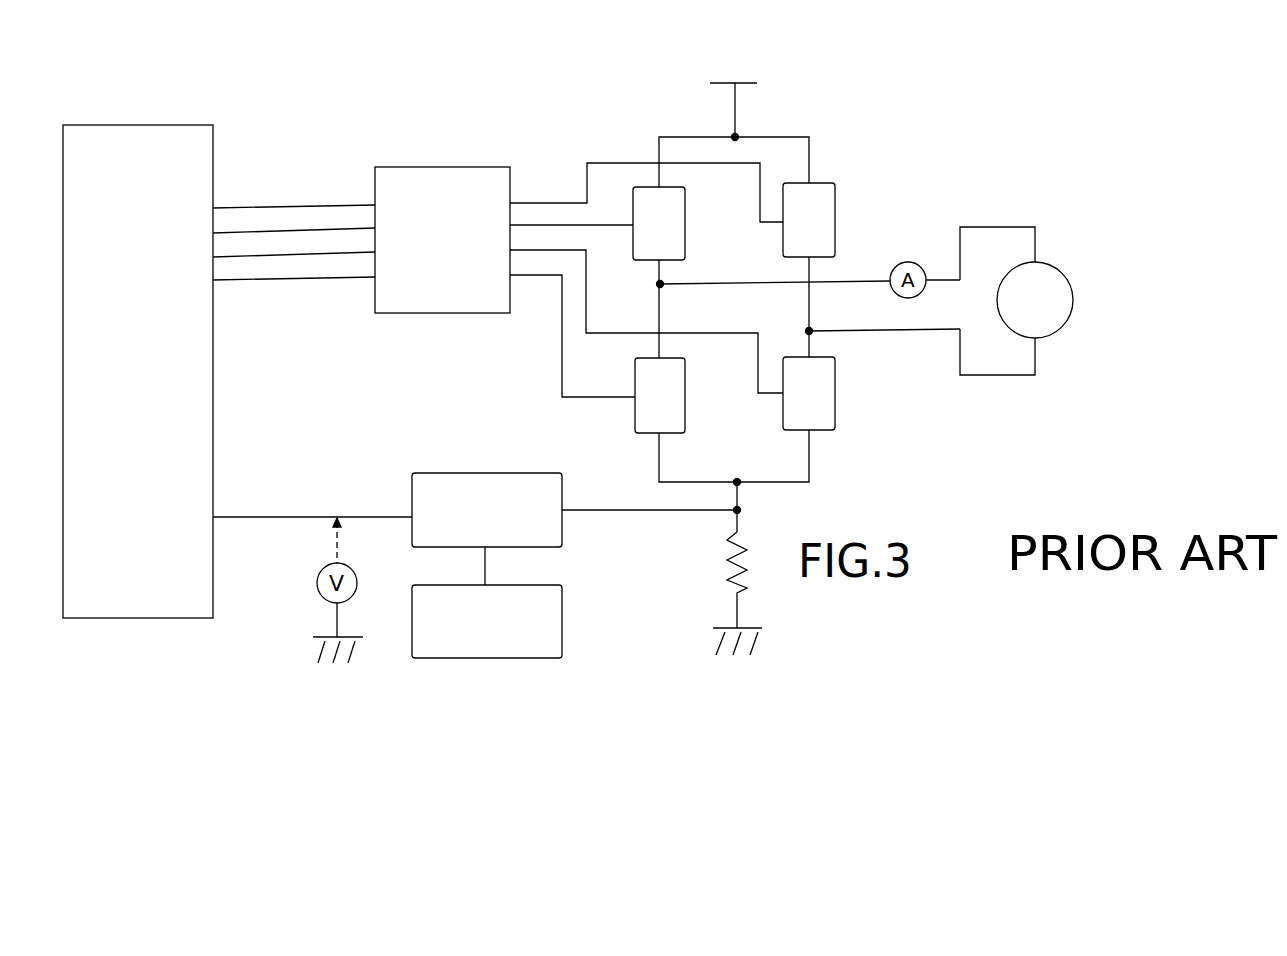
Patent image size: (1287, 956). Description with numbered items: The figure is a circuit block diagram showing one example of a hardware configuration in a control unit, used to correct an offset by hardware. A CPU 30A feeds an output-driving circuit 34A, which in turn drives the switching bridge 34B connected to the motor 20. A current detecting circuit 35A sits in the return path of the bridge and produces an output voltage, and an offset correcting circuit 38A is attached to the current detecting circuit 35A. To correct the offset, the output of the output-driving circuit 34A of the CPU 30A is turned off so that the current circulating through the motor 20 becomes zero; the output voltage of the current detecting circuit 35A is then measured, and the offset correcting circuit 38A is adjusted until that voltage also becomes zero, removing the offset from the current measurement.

The CPU 30A is at (213, 164).
The output-driving circuit 34A is at (438, 167).
The bridge circuit (switching transistors) 34B is at (858, 149).
The motor 20 is at (1063, 325).
The current detecting circuit 35A is at (460, 473).
The offset correcting circuit 38A is at (562, 624).